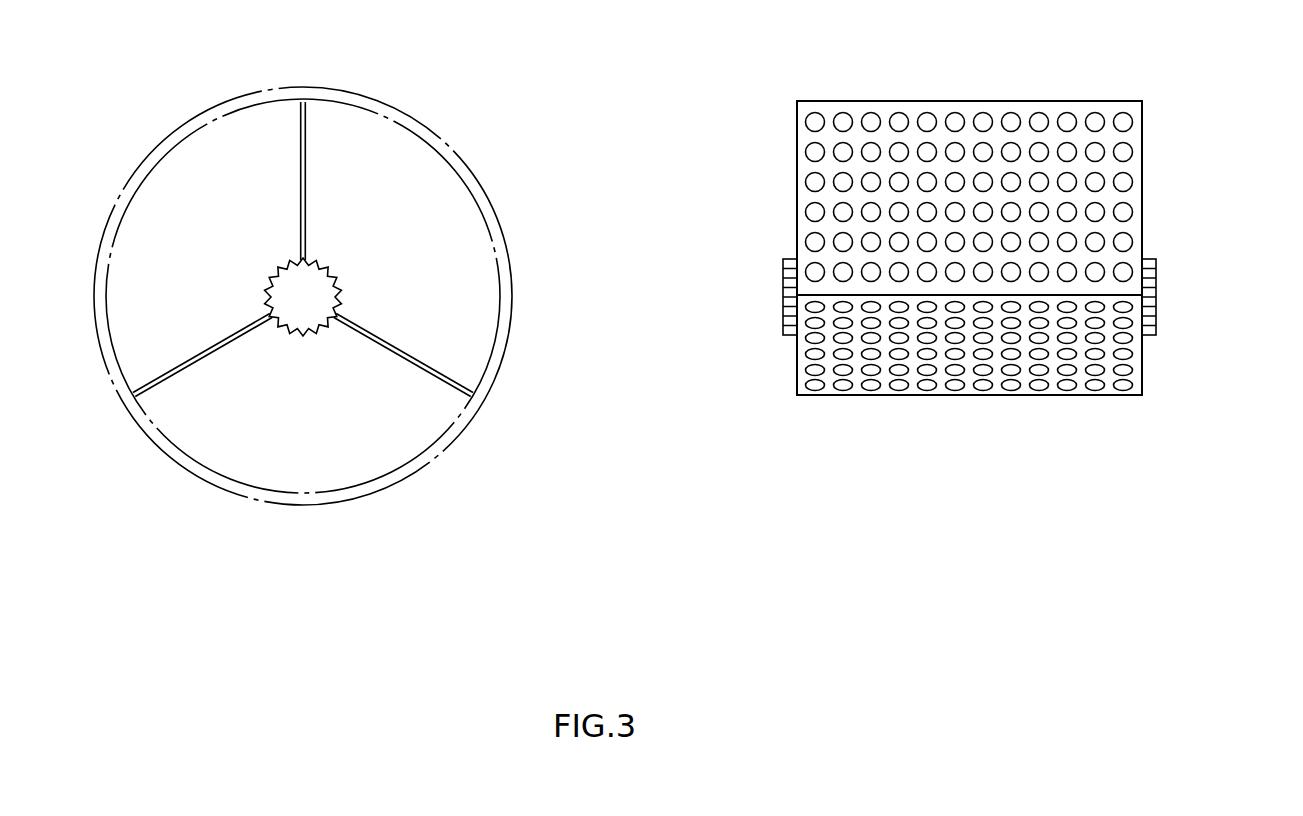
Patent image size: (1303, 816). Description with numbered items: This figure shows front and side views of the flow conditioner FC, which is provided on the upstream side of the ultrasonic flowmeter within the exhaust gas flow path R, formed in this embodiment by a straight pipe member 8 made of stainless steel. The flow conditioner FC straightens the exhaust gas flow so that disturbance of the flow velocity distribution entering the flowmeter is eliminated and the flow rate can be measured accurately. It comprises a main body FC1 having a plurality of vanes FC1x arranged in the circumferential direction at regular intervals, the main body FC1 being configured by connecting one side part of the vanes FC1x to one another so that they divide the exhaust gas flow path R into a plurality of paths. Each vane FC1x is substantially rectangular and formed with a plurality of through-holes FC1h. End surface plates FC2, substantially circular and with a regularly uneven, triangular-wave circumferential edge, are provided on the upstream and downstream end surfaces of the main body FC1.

The straight pipe member 8 is at (434, 464).
The exhaust gas flow path R is at (312, 468).
The flow conditioner FC is at (342, 147).
The main body FC1 is at (272, 217).
The vanes FC1x is at (300, 157).
The through-holes FC1h is at (897, 112).
The end surface plates FC2 is at (783, 290).